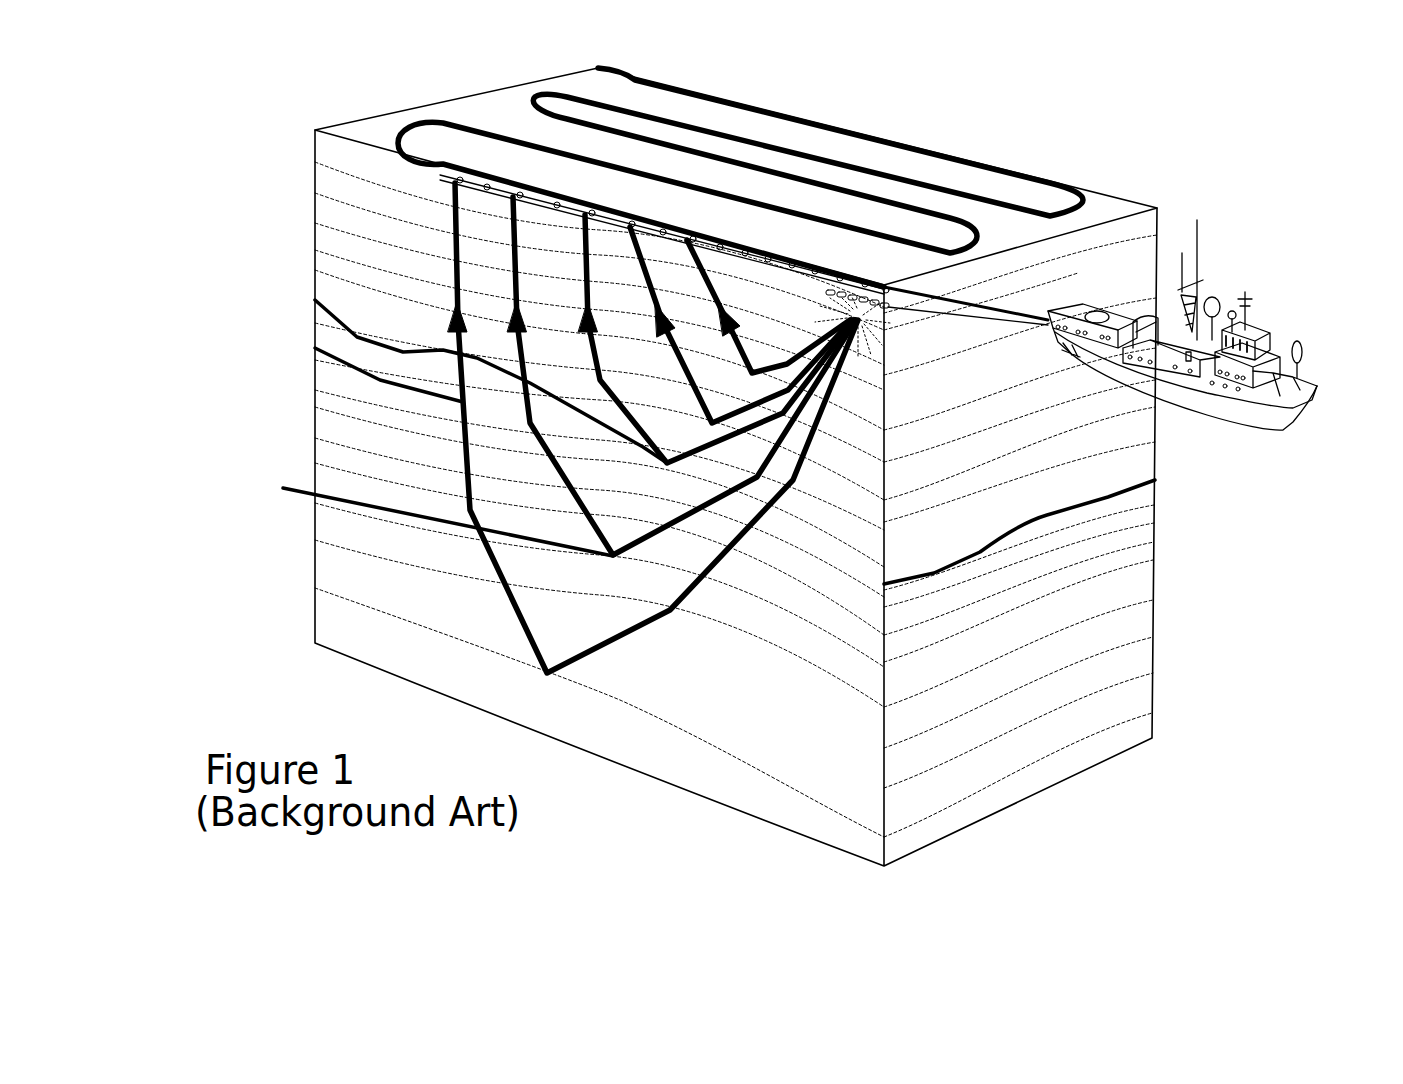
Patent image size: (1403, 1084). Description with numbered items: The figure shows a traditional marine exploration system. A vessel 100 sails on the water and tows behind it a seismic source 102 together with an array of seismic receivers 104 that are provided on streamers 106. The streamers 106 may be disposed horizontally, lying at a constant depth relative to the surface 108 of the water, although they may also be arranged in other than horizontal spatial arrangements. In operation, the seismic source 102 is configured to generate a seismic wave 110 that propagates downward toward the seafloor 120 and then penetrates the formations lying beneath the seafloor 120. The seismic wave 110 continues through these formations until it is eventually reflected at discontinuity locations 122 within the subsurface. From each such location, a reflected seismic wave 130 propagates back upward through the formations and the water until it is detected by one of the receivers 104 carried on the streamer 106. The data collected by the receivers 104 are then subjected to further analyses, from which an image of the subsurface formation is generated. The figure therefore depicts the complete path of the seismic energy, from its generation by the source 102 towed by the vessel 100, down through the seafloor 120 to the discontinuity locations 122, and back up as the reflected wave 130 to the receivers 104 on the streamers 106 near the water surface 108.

The vessel 100 is at (1277, 323).
The seismic source 102 is at (885, 283).
The seismic receivers 104 is at (592, 213).
The streamers 106 is at (505, 187).
The surface of the water 108 is at (657, 217).
The seismic wave 110 is at (795, 477).
The seafloor 120 is at (1112, 486).
The discontinuity locations 122 is at (548, 672).
The reflected seismic wave 130 is at (315, 348).